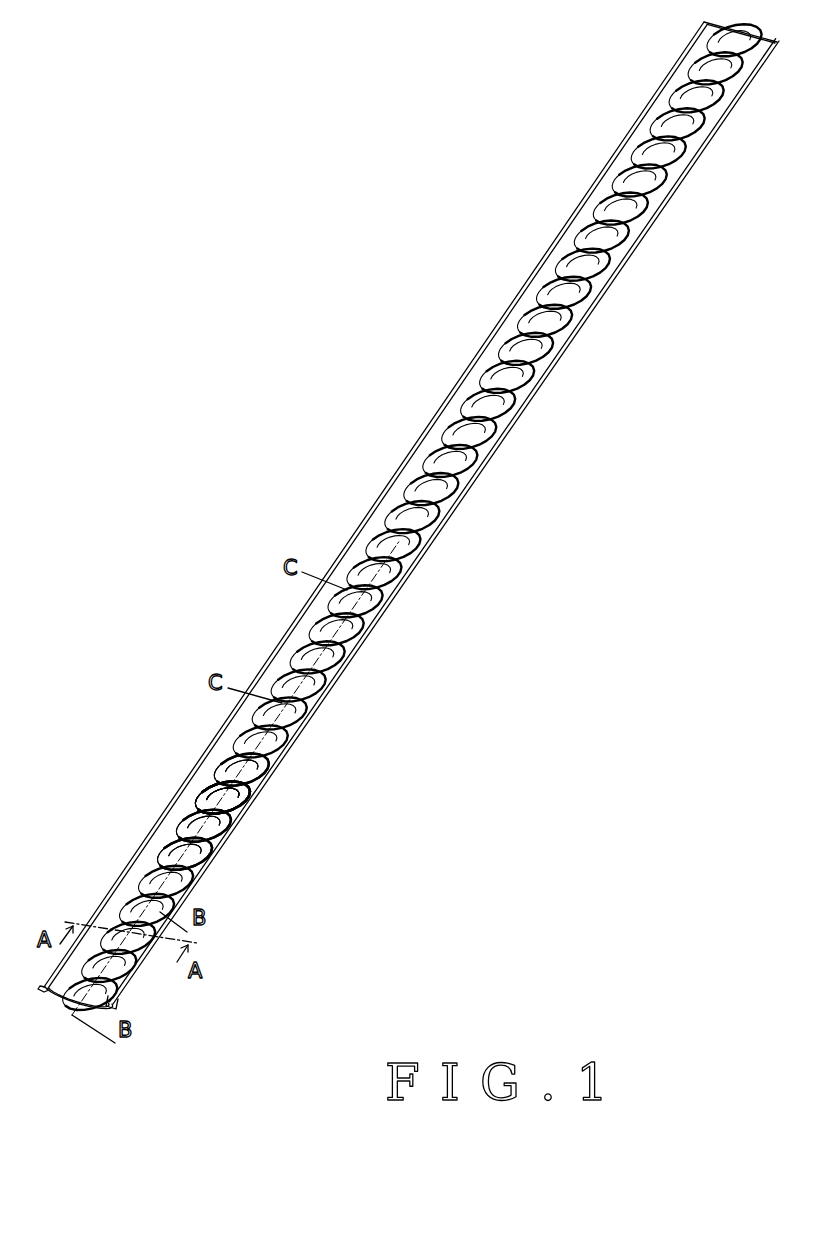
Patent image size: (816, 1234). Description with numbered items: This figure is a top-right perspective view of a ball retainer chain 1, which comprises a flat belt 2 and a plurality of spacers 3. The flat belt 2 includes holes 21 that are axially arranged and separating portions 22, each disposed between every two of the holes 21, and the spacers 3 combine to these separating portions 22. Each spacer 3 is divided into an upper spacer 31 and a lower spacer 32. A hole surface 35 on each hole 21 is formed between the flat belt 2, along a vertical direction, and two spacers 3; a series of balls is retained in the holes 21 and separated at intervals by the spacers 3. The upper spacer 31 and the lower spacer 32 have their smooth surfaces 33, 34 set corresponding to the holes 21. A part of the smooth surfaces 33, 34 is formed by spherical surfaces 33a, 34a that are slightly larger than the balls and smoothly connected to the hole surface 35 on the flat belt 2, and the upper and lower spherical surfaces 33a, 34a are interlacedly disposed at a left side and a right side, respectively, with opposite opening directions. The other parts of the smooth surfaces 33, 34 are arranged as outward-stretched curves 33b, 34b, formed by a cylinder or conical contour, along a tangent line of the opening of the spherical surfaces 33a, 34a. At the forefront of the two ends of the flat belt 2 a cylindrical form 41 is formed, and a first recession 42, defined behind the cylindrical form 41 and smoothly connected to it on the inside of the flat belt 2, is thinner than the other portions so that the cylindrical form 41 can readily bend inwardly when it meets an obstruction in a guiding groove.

The ball retainer chain 1 is at (403, 539).
The flat belt 2 is at (408, 539).
The holes 21 is at (280, 767).
The separating portions 22 is at (290, 725).
The spacers 3 is at (394, 517).
The upper spacer 31 is at (223, 810).
The lower spacer 32 is at (215, 847).
The smooth surface 33 is at (148, 759).
The upper spherical surface 33a is at (215, 782).
The outward-stretched curve 33b is at (207, 772).
The smooth surface 34 is at (289, 820).
The lower spherical surface 34a is at (242, 797).
The outward-stretched curve 34b is at (248, 813).
The hole surface 35 is at (188, 790).
The cylindrical form 41 is at (48, 990).
The first recession 42 is at (123, 1003).